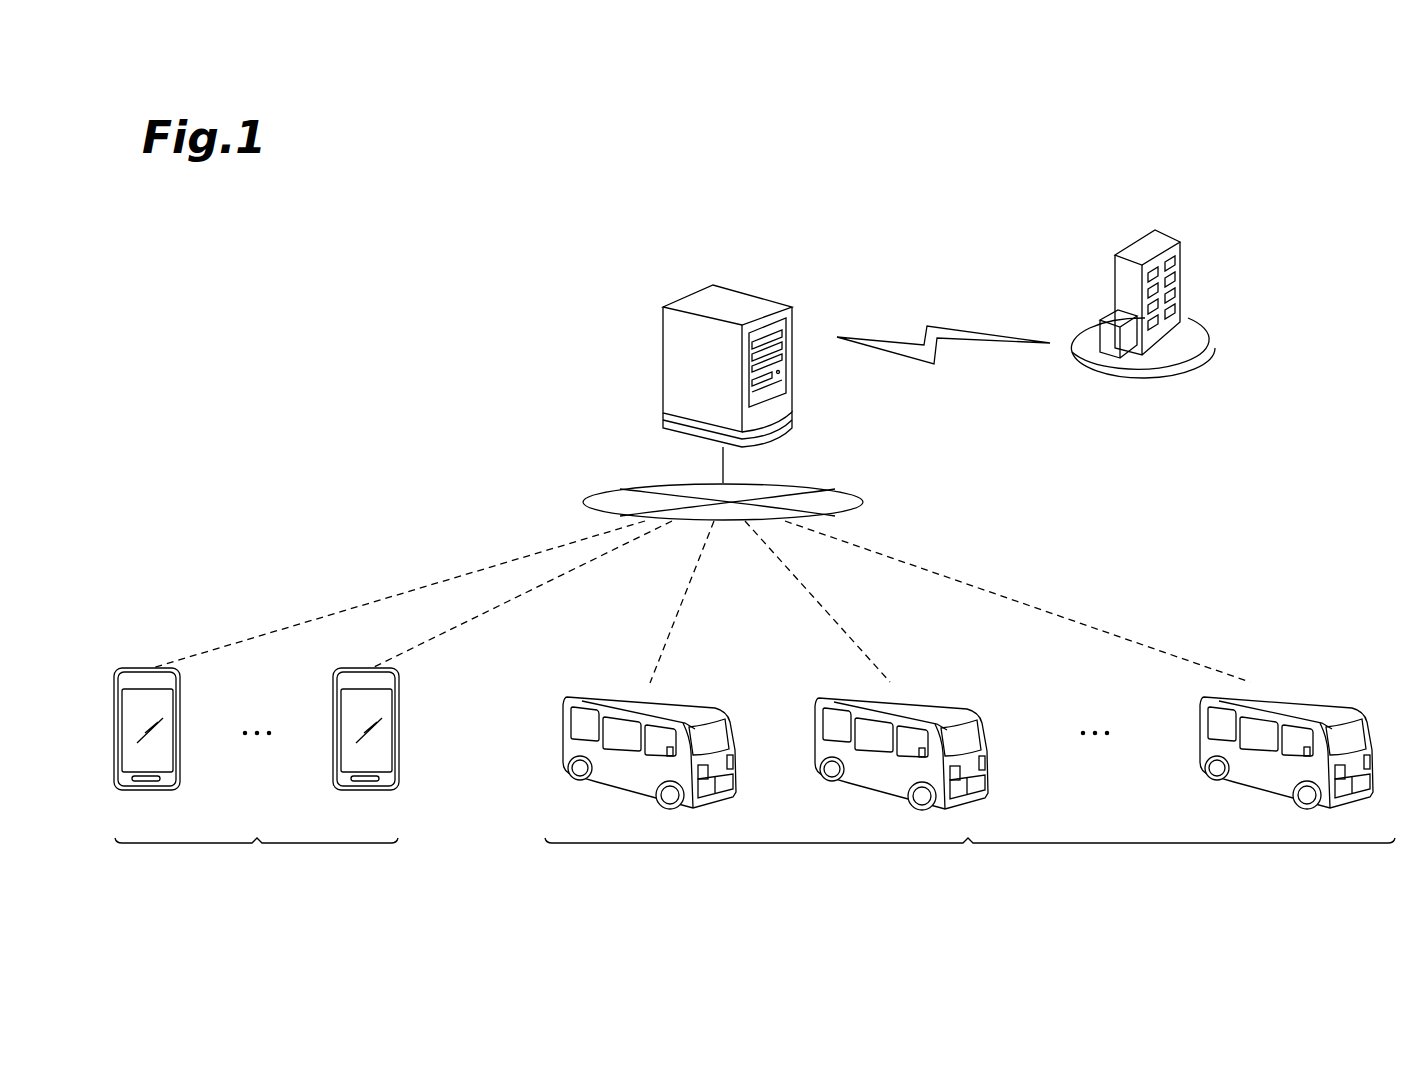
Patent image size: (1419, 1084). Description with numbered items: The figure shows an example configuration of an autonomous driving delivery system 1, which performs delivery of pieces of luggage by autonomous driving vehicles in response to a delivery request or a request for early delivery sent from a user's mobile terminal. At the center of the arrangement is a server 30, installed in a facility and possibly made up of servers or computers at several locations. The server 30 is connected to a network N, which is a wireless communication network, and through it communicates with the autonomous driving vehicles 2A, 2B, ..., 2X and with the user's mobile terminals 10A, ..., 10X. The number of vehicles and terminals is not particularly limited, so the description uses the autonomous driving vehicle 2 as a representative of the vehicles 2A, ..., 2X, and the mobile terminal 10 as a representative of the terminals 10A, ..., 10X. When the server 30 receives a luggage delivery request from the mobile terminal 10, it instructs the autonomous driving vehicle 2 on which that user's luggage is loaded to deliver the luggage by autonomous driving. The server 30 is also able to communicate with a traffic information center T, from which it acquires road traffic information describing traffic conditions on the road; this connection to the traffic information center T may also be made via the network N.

The autonomous driving delivery system 1 is at (833, 264).
The server 30 is at (757, 300).
The network N is at (832, 490).
The traffic information center T is at (1081, 266).
The mobile terminal 10A is at (181, 697).
The mobile terminal 10X is at (400, 697).
The mobile terminal 10 is at (256, 860).
The autonomous driving vehicle 2A is at (686, 698).
The autonomous driving vehicle 2B is at (928, 698).
The autonomous driving vehicle 2X is at (1312, 698).
The autonomous driving vehicle 2 is at (970, 860).